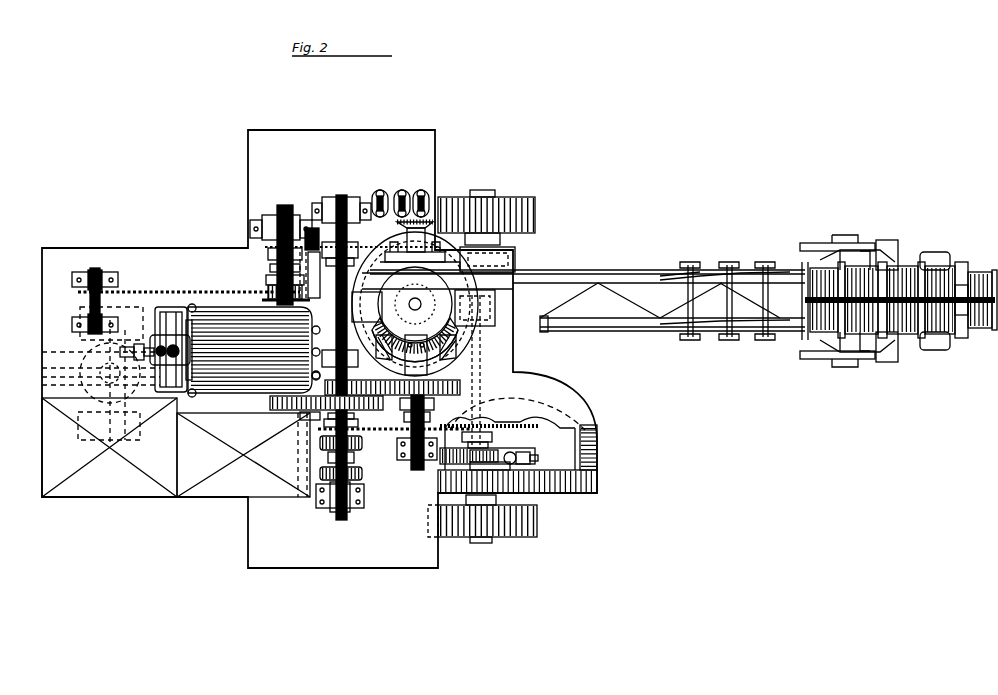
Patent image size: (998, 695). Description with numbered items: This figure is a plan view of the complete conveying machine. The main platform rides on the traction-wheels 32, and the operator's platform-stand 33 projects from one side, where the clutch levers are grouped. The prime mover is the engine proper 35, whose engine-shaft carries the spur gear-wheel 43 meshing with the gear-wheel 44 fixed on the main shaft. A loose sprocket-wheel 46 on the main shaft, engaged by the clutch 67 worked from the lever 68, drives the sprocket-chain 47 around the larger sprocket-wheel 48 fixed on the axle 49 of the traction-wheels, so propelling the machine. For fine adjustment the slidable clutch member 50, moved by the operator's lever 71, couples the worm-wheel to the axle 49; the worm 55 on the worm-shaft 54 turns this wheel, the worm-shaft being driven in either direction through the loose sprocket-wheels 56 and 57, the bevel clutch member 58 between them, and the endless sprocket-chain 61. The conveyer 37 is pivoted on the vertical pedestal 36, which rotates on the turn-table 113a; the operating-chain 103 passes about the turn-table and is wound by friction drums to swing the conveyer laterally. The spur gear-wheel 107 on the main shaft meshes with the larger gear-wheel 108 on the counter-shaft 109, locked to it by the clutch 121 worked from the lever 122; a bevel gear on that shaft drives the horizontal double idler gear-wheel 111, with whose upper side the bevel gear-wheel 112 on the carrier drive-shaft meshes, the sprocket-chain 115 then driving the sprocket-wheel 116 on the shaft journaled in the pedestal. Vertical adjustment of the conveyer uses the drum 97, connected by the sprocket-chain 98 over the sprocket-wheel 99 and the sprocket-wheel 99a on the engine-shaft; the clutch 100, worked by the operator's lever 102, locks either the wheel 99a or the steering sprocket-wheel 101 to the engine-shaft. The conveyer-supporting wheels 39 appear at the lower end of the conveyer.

The traction-wheels 32 is at (528, 212).
The operator's platform-stand 33 is at (370, 185).
The engine proper 35 is at (222, 385).
The vertical pedestal 36 is at (432, 299).
The conveyer 37 is at (589, 290).
The arm 39 is at (812, 246).
The spur gear-wheel 43 is at (270, 405).
The gear-wheel 44 is at (300, 410).
The sprocket-wheel 46 is at (394, 418).
The sprocket-chain 47 is at (368, 464).
The sprocket-wheel 48 is at (505, 426).
The axle 49 is at (480, 385).
The laterally-slidable clutch member 50 is at (470, 442).
The worm-shaft 54 is at (445, 476).
The worm 55 is at (498, 452).
The sprocket-wheel 56 is at (356, 476).
The sprocket-wheel 57 is at (356, 443).
The laterally-movable clutch member 58 is at (352, 454).
The endless sprocket-chain 61 is at (362, 470).
The clutch 67 is at (330, 422).
The lever 68 is at (380, 190).
The operator's lever 71 is at (421, 190).
The drum 97 is at (92, 301).
The sprocket-chain 98 is at (189, 282).
The sprocket-wheel 99 is at (96, 277).
The sprocket-wheel 99a is at (268, 288).
The clutch 100 is at (304, 280).
The sprocket-wheel 101 is at (264, 238).
The operator's lever 102 is at (326, 252).
The operating-chain 103 is at (386, 360).
The spur gear-wheel 107 is at (405, 358).
The gear-wheel 108 is at (400, 379).
The counter-shaft 109 is at (424, 416).
The double idler gear-wheel 111 is at (415, 314).
The bevel gear-wheel 112 is at (280, 322).
The turn-table 113a is at (465, 330).
The sprocket-chain 115 is at (341, 295).
The sprocket-wheel 116 is at (406, 223).
The clutch 121 is at (426, 404).
The lever 122 is at (403, 190).